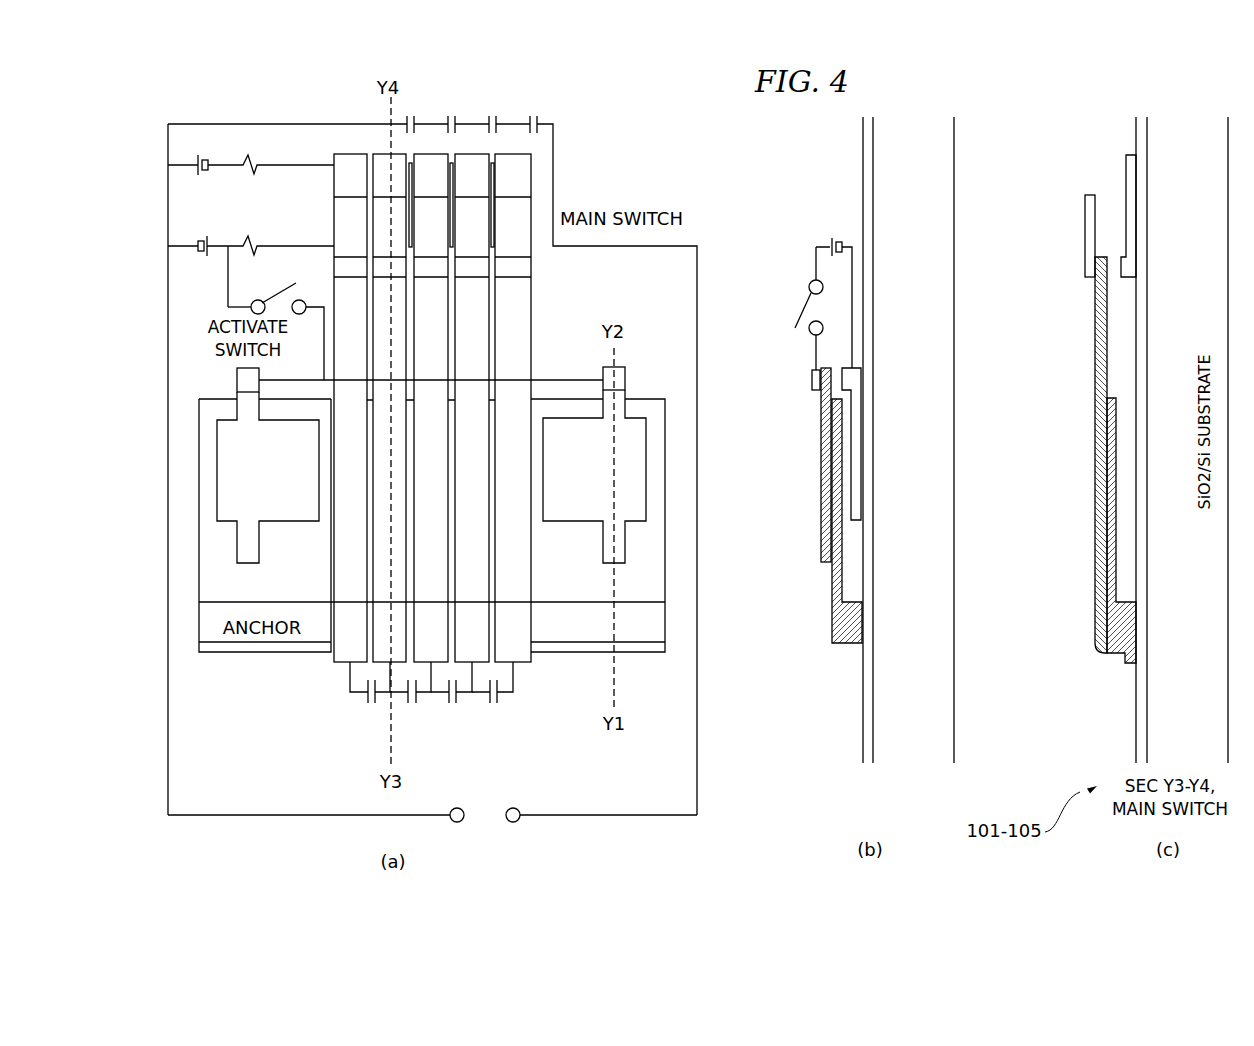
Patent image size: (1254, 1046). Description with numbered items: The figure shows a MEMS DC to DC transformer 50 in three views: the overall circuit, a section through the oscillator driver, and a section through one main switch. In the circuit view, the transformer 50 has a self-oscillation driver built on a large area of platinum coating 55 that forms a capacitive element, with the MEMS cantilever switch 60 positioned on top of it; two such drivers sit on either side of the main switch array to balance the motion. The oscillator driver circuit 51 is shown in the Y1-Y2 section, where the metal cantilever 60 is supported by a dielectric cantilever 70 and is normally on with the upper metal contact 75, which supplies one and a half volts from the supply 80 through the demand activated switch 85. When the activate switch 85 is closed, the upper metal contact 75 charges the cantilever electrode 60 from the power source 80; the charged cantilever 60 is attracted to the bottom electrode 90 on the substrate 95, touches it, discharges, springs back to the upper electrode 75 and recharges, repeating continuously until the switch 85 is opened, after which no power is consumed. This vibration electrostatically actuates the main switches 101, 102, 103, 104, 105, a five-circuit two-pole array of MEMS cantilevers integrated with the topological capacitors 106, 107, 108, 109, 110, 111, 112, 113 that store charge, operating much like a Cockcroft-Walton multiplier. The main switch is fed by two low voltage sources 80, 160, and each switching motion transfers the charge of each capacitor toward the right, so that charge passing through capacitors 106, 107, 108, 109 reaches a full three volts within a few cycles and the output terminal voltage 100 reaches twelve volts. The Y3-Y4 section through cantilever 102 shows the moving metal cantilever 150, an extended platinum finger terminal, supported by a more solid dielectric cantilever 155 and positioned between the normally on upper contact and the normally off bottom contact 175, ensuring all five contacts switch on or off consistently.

The DC to DC transformer 50 is at (228, 100).
The oscillator driver circuit 51 is at (805, 828).
The platinum coating 55 is at (215, 487).
The metal cantilever 60 is at (822, 515).
The dielectric cantilever 70 is at (830, 607).
The upper metal contact 75 is at (810, 380).
The 1.5V supply 80 is at (203, 238).
The demand activated switch 85 is at (277, 297).
The bottom electrode 90 is at (856, 365).
The substrate 95 is at (868, 100).
The high voltage output 100 is at (420, 850).
The main switch cantilever 101 is at (348, 152).
The main switch cantilever 102 is at (380, 152).
The main switch cantilever 103 is at (436, 152).
The main switch cantilever 104 is at (476, 152).
The main switch cantilever 105 is at (522, 152).
The topological capacitor 106 is at (411, 95).
The topological capacitor 107 is at (452, 95).
The topological capacitor 108 is at (496, 95).
The topological capacitor 109 is at (540, 90).
The topological capacitor 110 is at (363, 725).
The topological capacitor 111 is at (417, 725).
The topological capacitor 112 is at (457, 728).
The topological capacitor 113 is at (495, 728).
The moving metal cantilever 150 is at (1098, 330).
The dielectric cantilever 155 is at (1130, 627).
The low voltage source 160 is at (197, 147).
The bottom contact 175 is at (1130, 153).